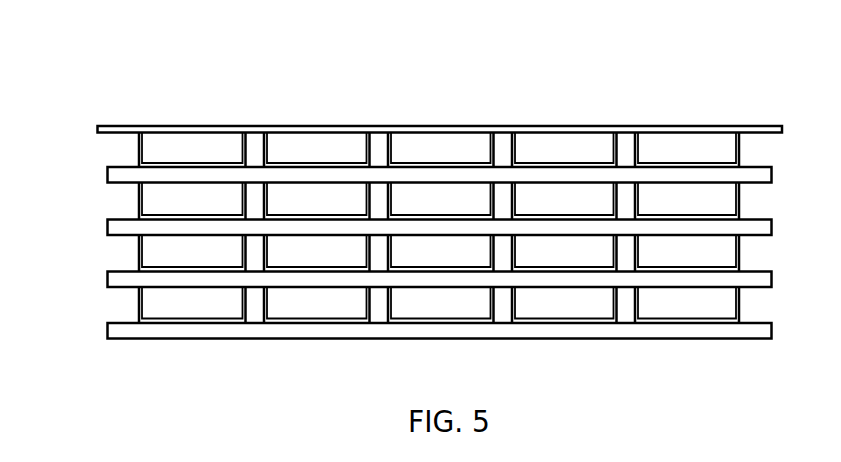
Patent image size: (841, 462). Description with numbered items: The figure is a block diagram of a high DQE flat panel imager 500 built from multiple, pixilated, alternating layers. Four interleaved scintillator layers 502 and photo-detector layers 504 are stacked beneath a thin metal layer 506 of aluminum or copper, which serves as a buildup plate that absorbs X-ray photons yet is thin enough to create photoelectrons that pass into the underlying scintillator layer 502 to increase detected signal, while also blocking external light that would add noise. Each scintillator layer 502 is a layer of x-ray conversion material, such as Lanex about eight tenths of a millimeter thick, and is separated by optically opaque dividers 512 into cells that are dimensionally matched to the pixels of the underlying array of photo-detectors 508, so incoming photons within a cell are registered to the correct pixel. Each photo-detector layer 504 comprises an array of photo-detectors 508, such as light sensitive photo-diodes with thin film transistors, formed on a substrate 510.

The imager 500 is at (99, 77).
The scintillator layer 502 is at (122, 145).
The photo-detector layer 504 is at (108, 163).
The thin metal layer 506 is at (433, 124).
The photo-detectors 508 is at (140, 213).
The substrate 510 is at (108, 229).
The optically opaque dividers 512 is at (252, 146).